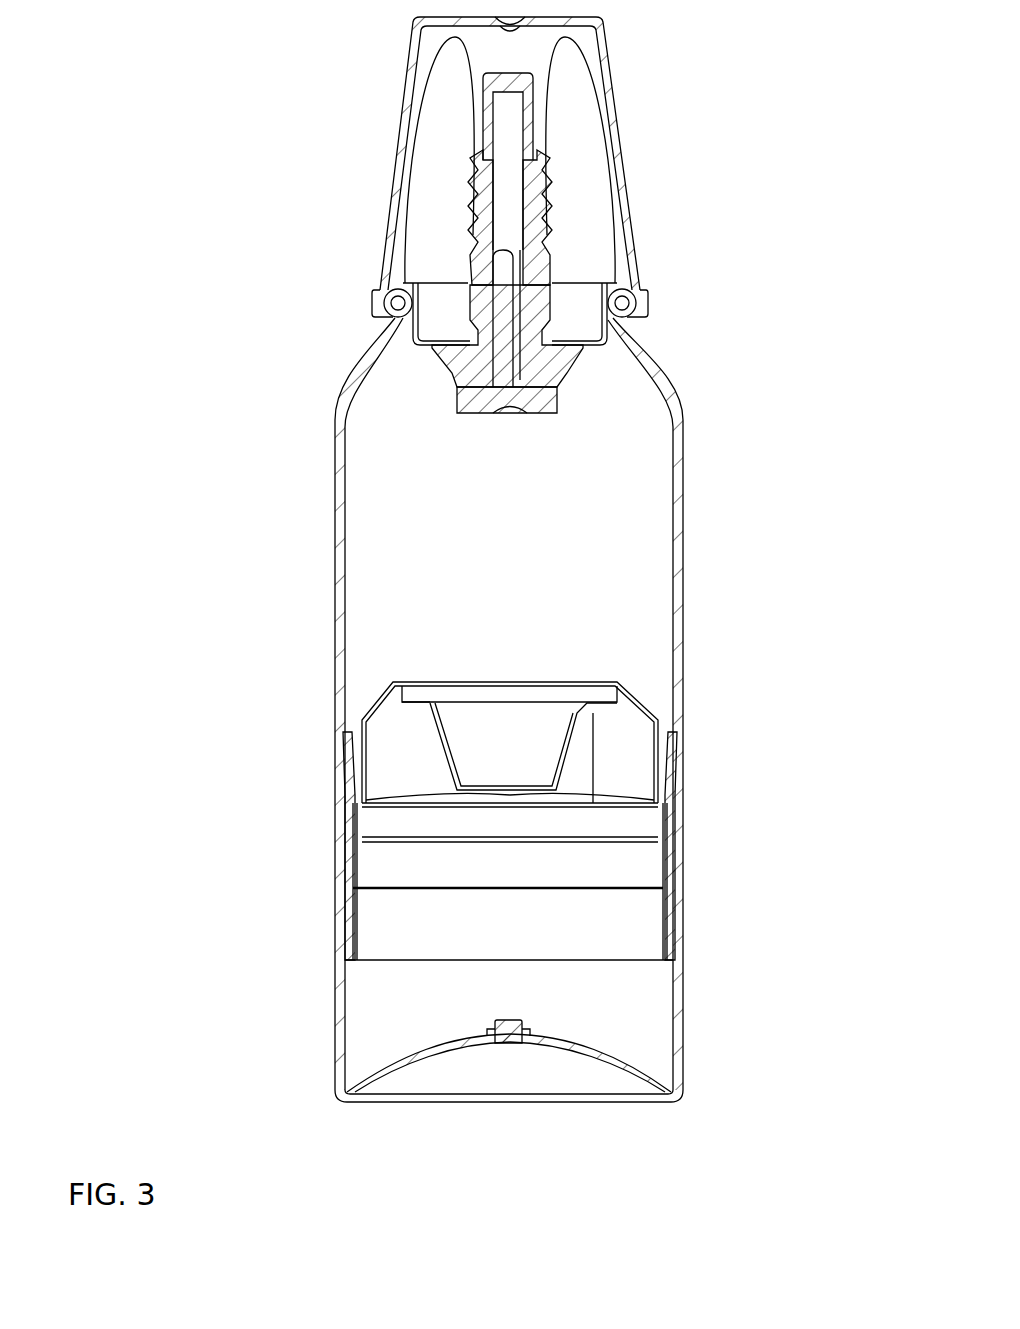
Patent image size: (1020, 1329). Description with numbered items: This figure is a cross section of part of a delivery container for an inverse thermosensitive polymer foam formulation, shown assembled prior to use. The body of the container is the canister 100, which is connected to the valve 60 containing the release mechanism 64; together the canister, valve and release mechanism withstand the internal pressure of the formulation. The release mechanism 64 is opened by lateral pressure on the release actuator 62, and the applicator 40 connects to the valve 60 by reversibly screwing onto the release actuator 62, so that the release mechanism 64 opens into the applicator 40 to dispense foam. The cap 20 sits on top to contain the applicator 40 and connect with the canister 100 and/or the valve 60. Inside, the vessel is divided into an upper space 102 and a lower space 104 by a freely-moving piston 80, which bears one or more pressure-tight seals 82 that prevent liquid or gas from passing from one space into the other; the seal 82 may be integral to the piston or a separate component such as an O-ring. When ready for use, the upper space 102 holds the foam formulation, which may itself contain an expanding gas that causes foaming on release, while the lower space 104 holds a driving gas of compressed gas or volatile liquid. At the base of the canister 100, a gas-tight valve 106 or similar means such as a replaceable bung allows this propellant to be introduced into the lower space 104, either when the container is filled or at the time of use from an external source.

The cap 20 is at (410, 42).
The applicator 40 is at (470, 203).
The valve 60 is at (442, 318).
The release actuator 62 is at (532, 206).
The release mechanism 64 is at (565, 386).
The piston 80 is at (368, 700).
The pressure-tight seals 82 is at (674, 962).
The canister 100 is at (497, 741).
The upper space 102 is at (530, 545).
The lower space 104 is at (540, 993).
The gas-tight valve 106 is at (508, 1047).